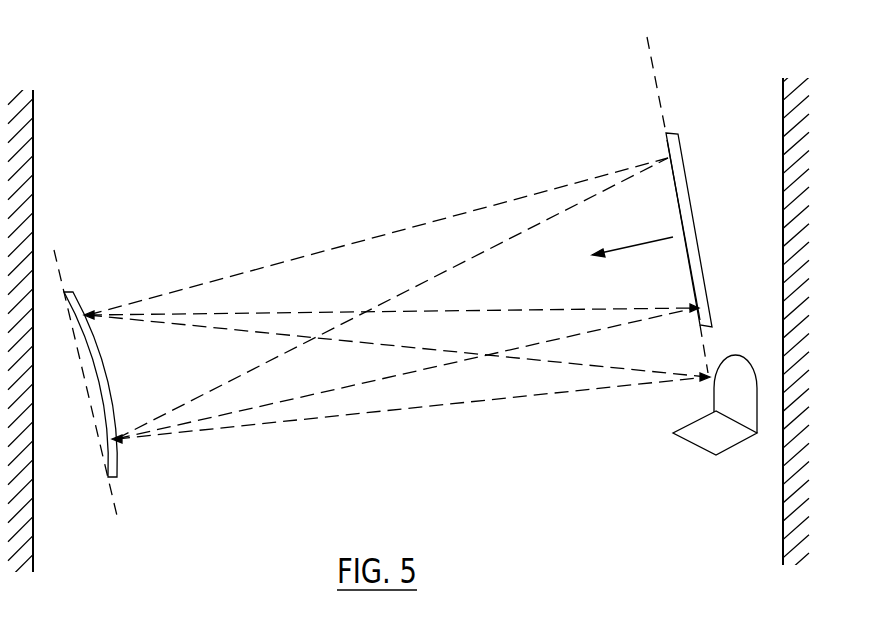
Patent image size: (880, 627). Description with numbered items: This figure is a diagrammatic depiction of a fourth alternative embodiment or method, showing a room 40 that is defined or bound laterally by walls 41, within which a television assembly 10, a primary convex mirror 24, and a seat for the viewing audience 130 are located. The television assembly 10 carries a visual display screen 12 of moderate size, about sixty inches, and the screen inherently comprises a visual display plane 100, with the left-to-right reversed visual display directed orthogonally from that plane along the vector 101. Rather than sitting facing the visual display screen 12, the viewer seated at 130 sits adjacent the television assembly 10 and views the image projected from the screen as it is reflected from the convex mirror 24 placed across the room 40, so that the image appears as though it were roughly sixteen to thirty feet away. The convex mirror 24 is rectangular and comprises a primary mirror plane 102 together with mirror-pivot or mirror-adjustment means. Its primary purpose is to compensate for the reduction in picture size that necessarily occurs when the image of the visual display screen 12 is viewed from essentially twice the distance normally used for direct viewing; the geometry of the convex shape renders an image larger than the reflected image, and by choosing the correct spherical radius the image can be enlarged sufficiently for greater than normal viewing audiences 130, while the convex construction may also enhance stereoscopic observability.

The television assembly 10 is at (690, 183).
The visual display screen 12 is at (690, 271).
The convex mirror 24 is at (77, 295).
The room 40 is at (308, 146).
The walls 41 is at (33, 532).
The visual display plane 100 is at (657, 88).
The vector 101 is at (642, 242).
The primary mirror plane 102 is at (113, 498).
The viewing audience 130 is at (717, 455).